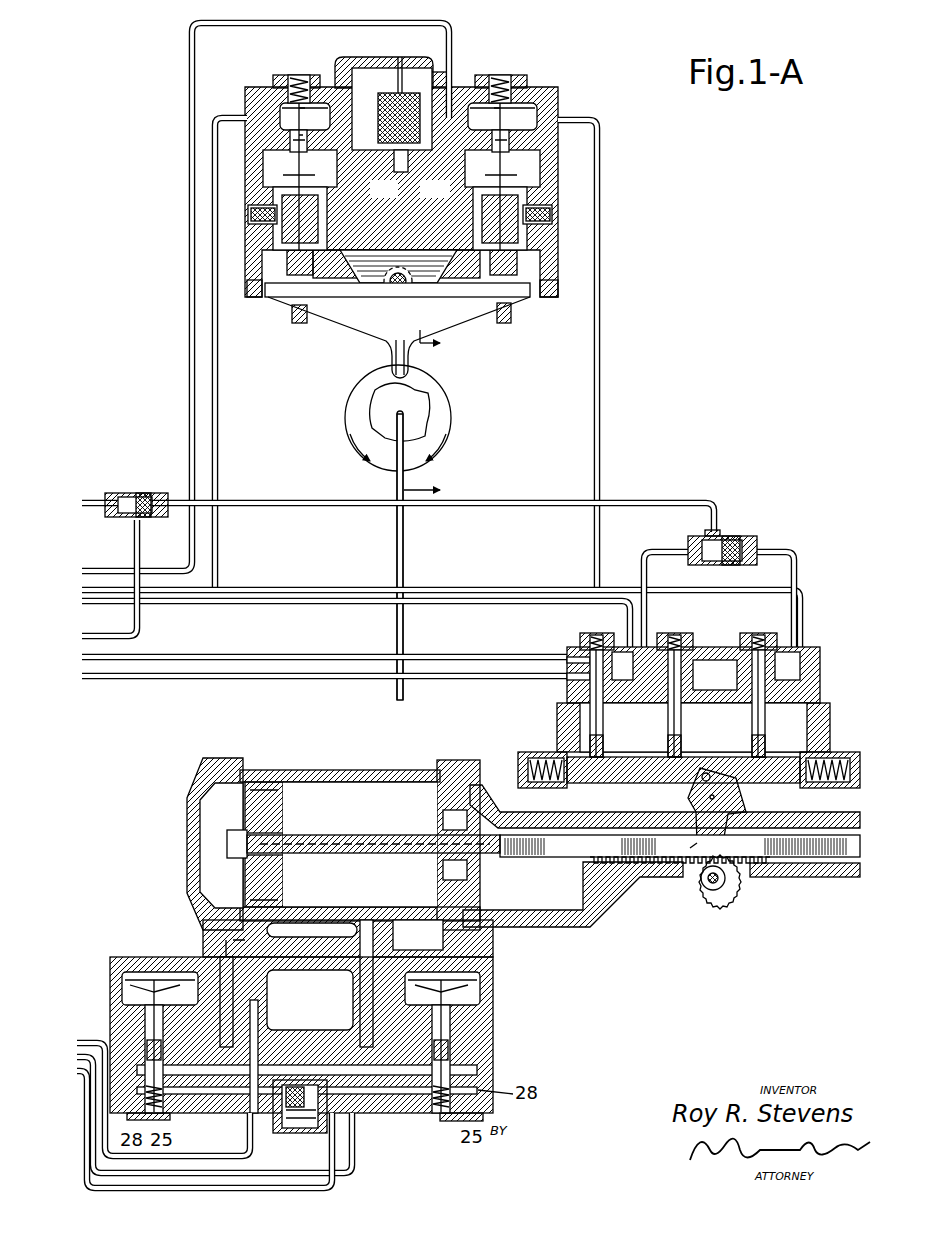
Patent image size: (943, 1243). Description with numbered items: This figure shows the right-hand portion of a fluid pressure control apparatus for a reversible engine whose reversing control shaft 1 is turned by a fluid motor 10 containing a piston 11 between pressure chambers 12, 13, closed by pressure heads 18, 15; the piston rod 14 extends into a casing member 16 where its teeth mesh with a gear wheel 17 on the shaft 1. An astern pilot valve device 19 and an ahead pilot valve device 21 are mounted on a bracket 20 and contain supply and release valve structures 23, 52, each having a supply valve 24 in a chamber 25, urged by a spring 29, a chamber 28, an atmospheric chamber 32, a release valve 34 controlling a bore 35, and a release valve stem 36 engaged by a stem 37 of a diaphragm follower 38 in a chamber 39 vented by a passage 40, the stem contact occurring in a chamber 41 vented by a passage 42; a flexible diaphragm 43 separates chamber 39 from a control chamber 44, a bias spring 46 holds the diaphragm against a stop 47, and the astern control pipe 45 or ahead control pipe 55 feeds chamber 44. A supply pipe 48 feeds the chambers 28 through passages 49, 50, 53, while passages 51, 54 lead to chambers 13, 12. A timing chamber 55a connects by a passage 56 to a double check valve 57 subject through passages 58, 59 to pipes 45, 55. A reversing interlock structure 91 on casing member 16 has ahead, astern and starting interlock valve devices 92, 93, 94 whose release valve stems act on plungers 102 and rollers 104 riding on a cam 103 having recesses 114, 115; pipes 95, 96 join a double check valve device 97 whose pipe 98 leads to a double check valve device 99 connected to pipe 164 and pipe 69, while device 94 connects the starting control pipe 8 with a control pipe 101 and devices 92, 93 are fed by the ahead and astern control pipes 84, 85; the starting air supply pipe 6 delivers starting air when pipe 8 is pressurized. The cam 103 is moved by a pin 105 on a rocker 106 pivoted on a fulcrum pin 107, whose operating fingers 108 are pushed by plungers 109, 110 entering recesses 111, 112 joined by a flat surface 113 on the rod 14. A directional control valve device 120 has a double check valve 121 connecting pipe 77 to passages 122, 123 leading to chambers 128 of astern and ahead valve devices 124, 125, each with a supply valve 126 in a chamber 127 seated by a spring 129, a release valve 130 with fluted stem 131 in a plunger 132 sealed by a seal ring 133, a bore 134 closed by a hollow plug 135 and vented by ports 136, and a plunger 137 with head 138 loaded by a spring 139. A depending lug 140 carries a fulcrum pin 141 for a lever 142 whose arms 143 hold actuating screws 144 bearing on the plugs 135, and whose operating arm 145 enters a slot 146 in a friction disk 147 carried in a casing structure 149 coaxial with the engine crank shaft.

The reversing control shaft 1 is at (718, 887).
The starting air supply pipe 6 is at (430, 415).
The control pipe 8 is at (404, 556).
The fluid motor 10 is at (330, 770).
The piston 11 is at (255, 778).
The pressure chamber 12 is at (205, 843).
The pressure chamber 13 is at (410, 780).
The rod 14 is at (362, 840).
The pressure head 15 is at (456, 765).
The casing member 16 is at (558, 910).
The gear wheel 17 is at (712, 892).
The pressure head 18 is at (190, 821).
The astern pilot valve device 19 is at (495, 980).
The bracket 20 is at (388, 1120).
The ahead pilot valve device 21 is at (105, 982).
The supply and release valve structure 23 is at (480, 1072).
The supply valve 24 is at (457, 1125).
The chamber 25 is at (580, 650).
The chamber 28 is at (575, 690).
The spring 29 is at (445, 1120).
The chamber 32 is at (423, 1050).
The fluid pressure release valve 34 is at (492, 1062).
The bore 35 is at (492, 1052).
The stem 36 is at (640, 720).
The stem 37 is at (496, 1022).
The diaphragm follower 38 is at (468, 972).
The chamber 39 is at (500, 975).
The passage 40 is at (496, 992).
The chamber 41 is at (492, 1032).
The passage 42 is at (492, 1042).
The flexible diaphragm 43 is at (437, 962).
The control chamber 44 is at (135, 960).
The control pipe 45 is at (233, 1174).
The bias spring 46 is at (494, 1006).
The stop 47 is at (452, 970).
The fluid pressure supply pipe 48 is at (290, 1188).
The passage 49 is at (330, 1085).
The passage 50 is at (410, 1114).
The passage 51 is at (402, 920).
The supply and release valve structure 52 is at (142, 1057).
The passage 53 is at (193, 1110).
The passage 54 is at (233, 942).
The ahead control pipe 55 is at (177, 1157).
The timing chamber 55a is at (326, 935).
The passage 56 is at (300, 1085).
The double check valve 57 is at (300, 1132).
The passage 58 is at (352, 1125).
The passage 59 is at (270, 1075).
The pipe 69 is at (110, 636).
The pipe 77 is at (188, 42).
The ahead control pipe 84 is at (318, 590).
The astern control pipe 85 is at (262, 600).
The reversing interlock structure 91 is at (540, 792).
The ahead interlock valve device 92 is at (761, 640).
The astern interlock valve device 93 is at (677, 640).
The starting interlock valve device 94 is at (598, 640).
The pipe 95 is at (792, 573).
The pipe 96 is at (647, 573).
The double check valve device 97 is at (740, 538).
The pipe 98 is at (498, 506).
The double check valve device 99 is at (132, 490).
The control pipe 101 is at (118, 678).
The plungers 102 is at (673, 742).
The cam 103 is at (622, 787).
The roller 104 is at (560, 752).
The pin 105 is at (705, 765).
The rocker 106 is at (698, 795).
The fulcrum pin 107 is at (700, 815).
The operating finger 108 is at (746, 812).
The plunger 109 is at (692, 850).
The plunger 110 is at (746, 826).
The recess 111 is at (545, 847).
The recess 112 is at (727, 848).
The flat surface 113 is at (592, 848).
The recess 114 is at (592, 787).
The recess 115 is at (756, 790).
The directional control valve device 120 is at (365, 58).
The double check valve 121 is at (400, 60).
The passage 122 is at (401, 192).
The passage 123 is at (417, 172).
The astern valve device 124 is at (247, 104).
The ahead valve device 125 is at (560, 108).
The supply valve 126 is at (282, 86).
The chamber 127 is at (320, 100).
The chamber 128 is at (290, 160).
The spring 129 is at (297, 78).
The release valve 130 is at (300, 140).
The fluted stem 131 is at (285, 192).
The plunger 132 is at (250, 210).
The seal ring 133 is at (285, 172).
The bore 134 is at (292, 225).
The hollow plug 135 is at (258, 300).
The ports 136 is at (312, 262).
The plunger 137 is at (318, 210).
The enlarged head 138 is at (318, 232).
The spring 139 is at (300, 240).
The depending lug 140 is at (438, 270).
The fulcrum pin 141 is at (390, 287).
The lever 142 is at (317, 305).
The arms 143 is at (283, 300).
The adjustable actuating screw 144 is at (297, 325).
The depending operating arm 145 is at (382, 338).
The slot 146 is at (399, 345).
The friction disk 147 is at (346, 427).
The casing structure 149 is at (420, 420).
The pipe 164 is at (95, 498).